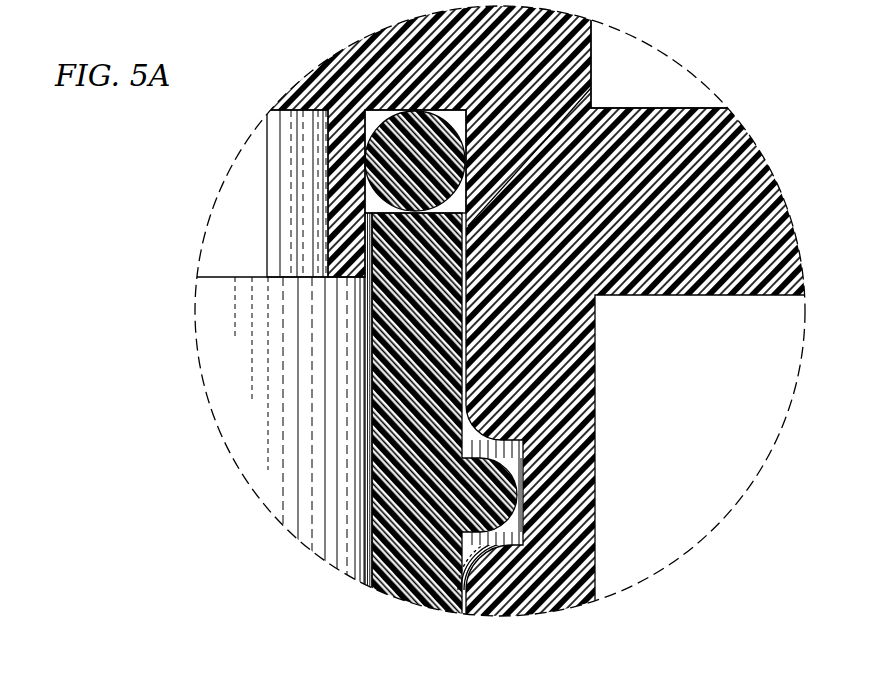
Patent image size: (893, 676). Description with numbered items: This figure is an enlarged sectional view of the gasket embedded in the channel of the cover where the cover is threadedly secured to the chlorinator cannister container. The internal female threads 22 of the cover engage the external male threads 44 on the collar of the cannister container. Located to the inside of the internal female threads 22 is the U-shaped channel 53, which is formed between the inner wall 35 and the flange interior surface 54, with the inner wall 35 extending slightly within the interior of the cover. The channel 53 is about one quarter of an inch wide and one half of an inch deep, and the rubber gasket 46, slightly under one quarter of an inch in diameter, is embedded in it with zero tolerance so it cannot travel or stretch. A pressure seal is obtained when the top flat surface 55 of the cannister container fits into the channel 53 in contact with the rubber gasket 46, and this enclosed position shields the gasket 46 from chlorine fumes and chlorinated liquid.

The internal female threads 22 is at (510, 577).
The inner wall 35 is at (344, 264).
The external male threads 44 is at (490, 481).
The rubber gasket 46 is at (425, 152).
The U-shaped channel 53 is at (378, 117).
The flange interior surface 54 is at (591, 90).
The top flat surface 55 is at (340, 196).